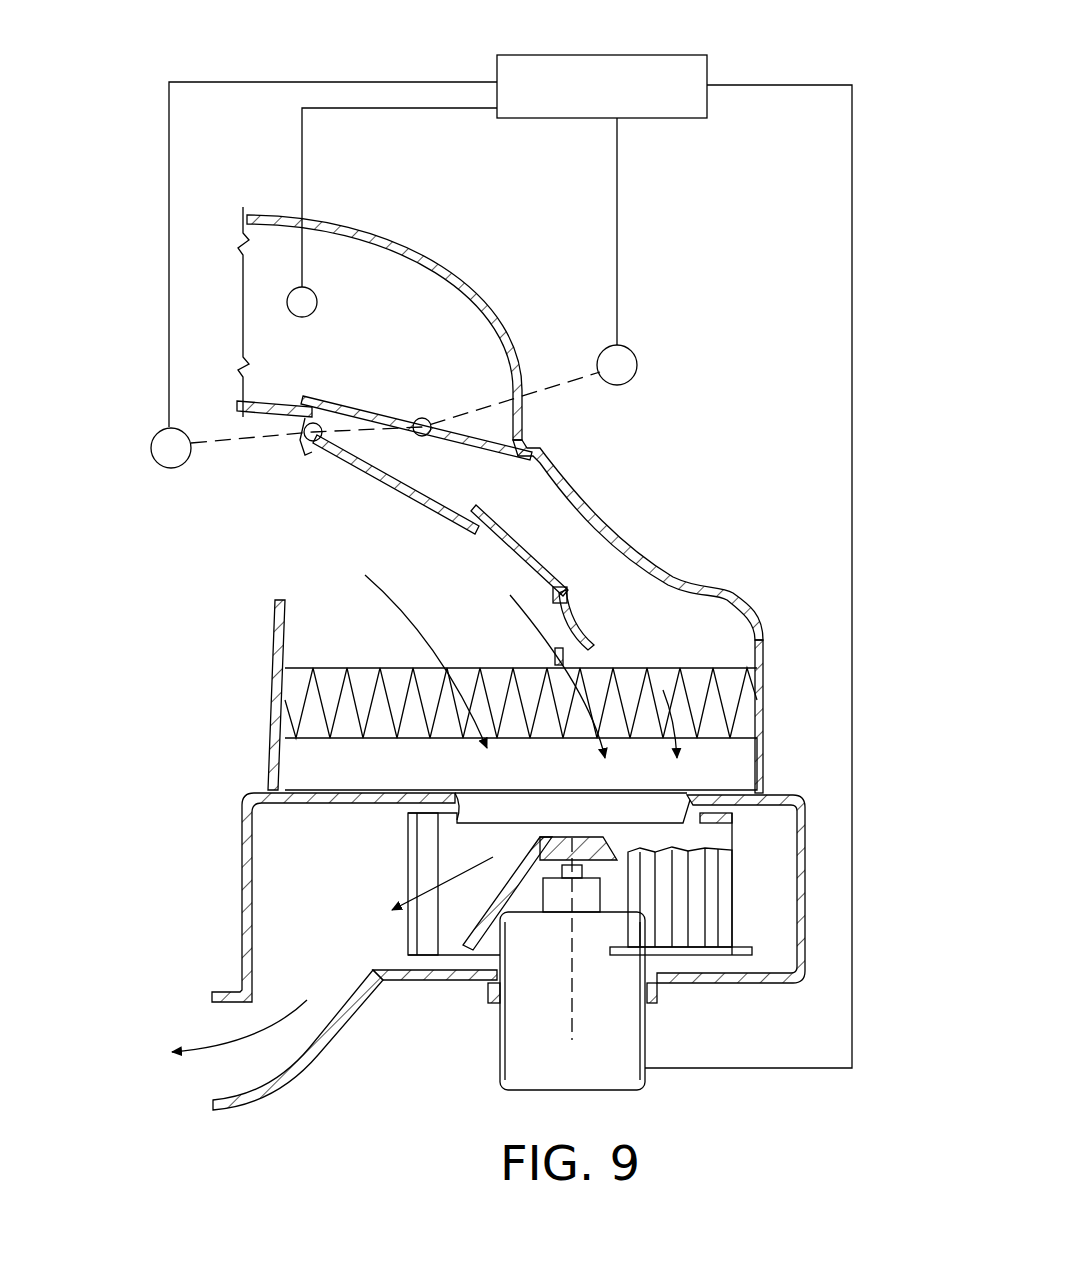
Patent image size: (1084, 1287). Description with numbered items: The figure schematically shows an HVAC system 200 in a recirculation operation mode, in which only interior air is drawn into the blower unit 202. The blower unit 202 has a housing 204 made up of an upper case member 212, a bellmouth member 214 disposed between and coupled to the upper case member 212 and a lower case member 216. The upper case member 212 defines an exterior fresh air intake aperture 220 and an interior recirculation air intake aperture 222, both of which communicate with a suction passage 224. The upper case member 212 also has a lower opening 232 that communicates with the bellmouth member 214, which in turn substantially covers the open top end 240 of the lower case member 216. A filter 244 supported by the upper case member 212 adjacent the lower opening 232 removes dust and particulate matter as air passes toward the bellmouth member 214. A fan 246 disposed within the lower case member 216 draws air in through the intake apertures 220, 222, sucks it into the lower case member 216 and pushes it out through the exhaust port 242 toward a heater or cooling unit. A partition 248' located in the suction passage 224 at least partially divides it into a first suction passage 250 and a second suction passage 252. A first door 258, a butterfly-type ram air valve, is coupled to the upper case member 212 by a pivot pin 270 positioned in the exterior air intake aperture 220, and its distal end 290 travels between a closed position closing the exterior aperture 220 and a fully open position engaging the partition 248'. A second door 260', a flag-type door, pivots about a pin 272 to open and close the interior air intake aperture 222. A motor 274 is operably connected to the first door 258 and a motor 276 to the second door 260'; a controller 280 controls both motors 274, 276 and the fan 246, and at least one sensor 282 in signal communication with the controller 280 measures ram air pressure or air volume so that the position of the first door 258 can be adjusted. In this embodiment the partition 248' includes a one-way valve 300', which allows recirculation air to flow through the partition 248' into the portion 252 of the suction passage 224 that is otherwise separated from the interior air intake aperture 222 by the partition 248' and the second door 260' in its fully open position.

The HVAC system 200 is at (778, 68).
The blower unit 202 is at (665, 491).
The housing 204 is at (600, 492).
The upper case member 212 is at (420, 255).
The bellmouth member 214 is at (766, 706).
The lower case member 216 is at (808, 862).
The exterior air intake aperture 220 is at (248, 277).
The interior air intake aperture 222 is at (290, 550).
The suction passage 224 is at (600, 558).
The lower opening 232 is at (705, 660).
The open top end 240 is at (497, 800).
The exhaust port 242 is at (230, 1020).
The filter 244 is at (313, 703).
The fan 246 is at (752, 905).
The partition 248' is at (494, 555).
The first suction passage 250 is at (303, 642).
The second suction passage 252 is at (655, 590).
The first door 258 is at (367, 412).
The second door 260' is at (396, 501).
The pivot pin 270 is at (428, 437).
The pin 272 is at (315, 447).
The motor 274 is at (637, 363).
The motor 276 is at (157, 470).
The controller 280 is at (530, 118).
The sensor 282 is at (318, 303).
The distal end 290 is at (525, 453).
The one-way valve 300' is at (622, 626).